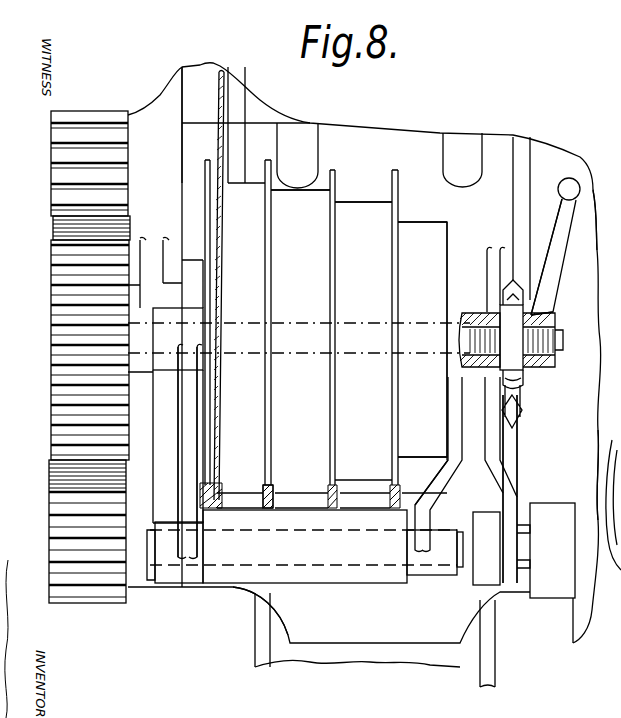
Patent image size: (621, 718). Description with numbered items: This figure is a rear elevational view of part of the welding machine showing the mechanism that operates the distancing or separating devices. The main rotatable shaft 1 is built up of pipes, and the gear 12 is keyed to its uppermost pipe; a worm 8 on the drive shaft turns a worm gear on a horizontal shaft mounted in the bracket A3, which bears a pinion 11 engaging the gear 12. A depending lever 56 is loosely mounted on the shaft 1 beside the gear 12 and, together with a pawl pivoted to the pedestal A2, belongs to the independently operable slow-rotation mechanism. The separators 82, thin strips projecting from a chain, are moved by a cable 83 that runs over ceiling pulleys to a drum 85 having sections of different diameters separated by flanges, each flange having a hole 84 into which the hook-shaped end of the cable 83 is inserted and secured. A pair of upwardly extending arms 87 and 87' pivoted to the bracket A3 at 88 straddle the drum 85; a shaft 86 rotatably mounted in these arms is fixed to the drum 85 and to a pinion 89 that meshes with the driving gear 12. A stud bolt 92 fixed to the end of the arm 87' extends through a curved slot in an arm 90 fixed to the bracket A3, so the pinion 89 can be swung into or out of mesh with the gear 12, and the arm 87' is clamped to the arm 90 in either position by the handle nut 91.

The gear 12 is at (95, 118).
The pinion 89 is at (62, 360).
The pinion 11 is at (88, 568).
The depending lever 56 is at (159, 125).
The cable 83 is at (224, 82).
The pedestal A2 is at (440, 695).
The drum 85 is at (300, 221).
The shaft 86 is at (462, 312).
The shaft 1 is at (582, 233).
The handle nut 91 is at (555, 270).
The stud bolt 92 is at (533, 316).
The arm 87 is at (213, 452).
The arm 90 is at (523, 408).
The arm 87' is at (497, 441).
The separators 82 is at (609, 445).
The hole 84 is at (280, 500).
The pivot 88 is at (147, 555).
The bracket A3 is at (296, 595).
The worm 8 is at (613, 656).